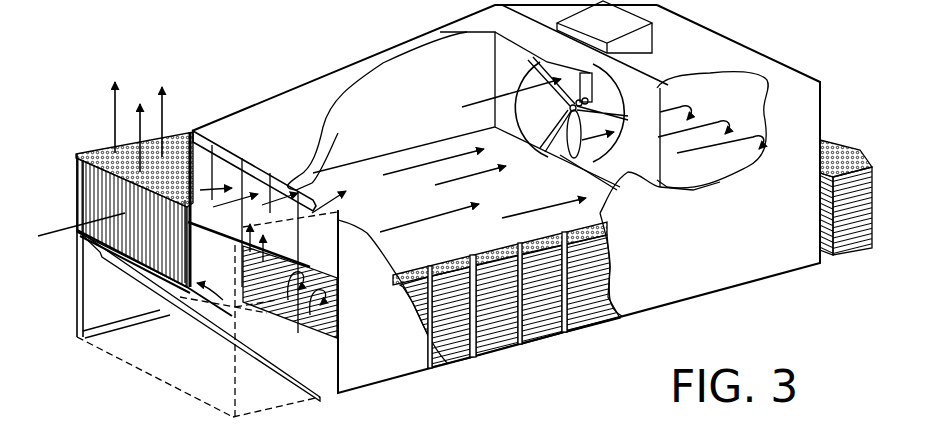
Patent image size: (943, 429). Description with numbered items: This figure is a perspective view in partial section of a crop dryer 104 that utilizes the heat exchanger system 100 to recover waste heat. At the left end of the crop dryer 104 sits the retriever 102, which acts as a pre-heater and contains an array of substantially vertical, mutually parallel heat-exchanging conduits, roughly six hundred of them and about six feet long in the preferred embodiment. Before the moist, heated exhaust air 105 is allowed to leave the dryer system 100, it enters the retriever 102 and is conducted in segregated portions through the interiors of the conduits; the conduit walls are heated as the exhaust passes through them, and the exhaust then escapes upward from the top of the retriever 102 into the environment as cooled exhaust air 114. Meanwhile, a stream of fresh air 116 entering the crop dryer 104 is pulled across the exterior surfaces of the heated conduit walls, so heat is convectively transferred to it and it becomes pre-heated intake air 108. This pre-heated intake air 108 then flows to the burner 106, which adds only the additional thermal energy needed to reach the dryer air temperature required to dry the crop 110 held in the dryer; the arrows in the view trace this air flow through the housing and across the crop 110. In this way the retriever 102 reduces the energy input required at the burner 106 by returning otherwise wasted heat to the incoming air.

The heat exchanger system 100 is at (144, 80).
The retriever 102 is at (103, 144).
The crop dryer 104 is at (652, 309).
The moist, heated exhaust air 105 is at (218, 332).
The burner 106 is at (247, 172).
The pre-heated intake air 108 is at (210, 144).
The crop 110 is at (495, 327).
The cooled exhaust air 114 is at (113, 97).
The fresh air 116 is at (75, 213).